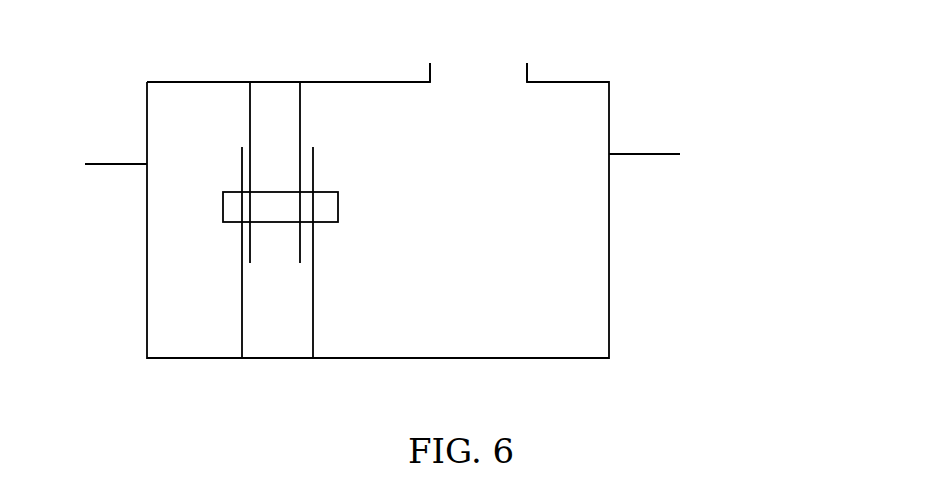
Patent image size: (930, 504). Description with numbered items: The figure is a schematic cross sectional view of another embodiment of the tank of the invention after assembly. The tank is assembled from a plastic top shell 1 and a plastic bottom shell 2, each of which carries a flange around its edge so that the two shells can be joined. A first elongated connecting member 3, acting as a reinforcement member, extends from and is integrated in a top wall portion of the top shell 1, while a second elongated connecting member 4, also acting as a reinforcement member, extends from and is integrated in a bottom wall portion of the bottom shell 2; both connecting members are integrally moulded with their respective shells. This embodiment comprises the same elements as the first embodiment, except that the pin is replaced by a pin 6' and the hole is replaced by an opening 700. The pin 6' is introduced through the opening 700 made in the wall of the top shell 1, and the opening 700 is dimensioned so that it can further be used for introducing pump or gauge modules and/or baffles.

The top shell 1 is at (612, 119).
The bottom shell 2 is at (612, 271).
The first elongated connecting member 3 is at (250, 128).
The second elongated connecting member 4 is at (247, 320).
The pin 6' is at (419, 300).
The opening 700 is at (513, 74).